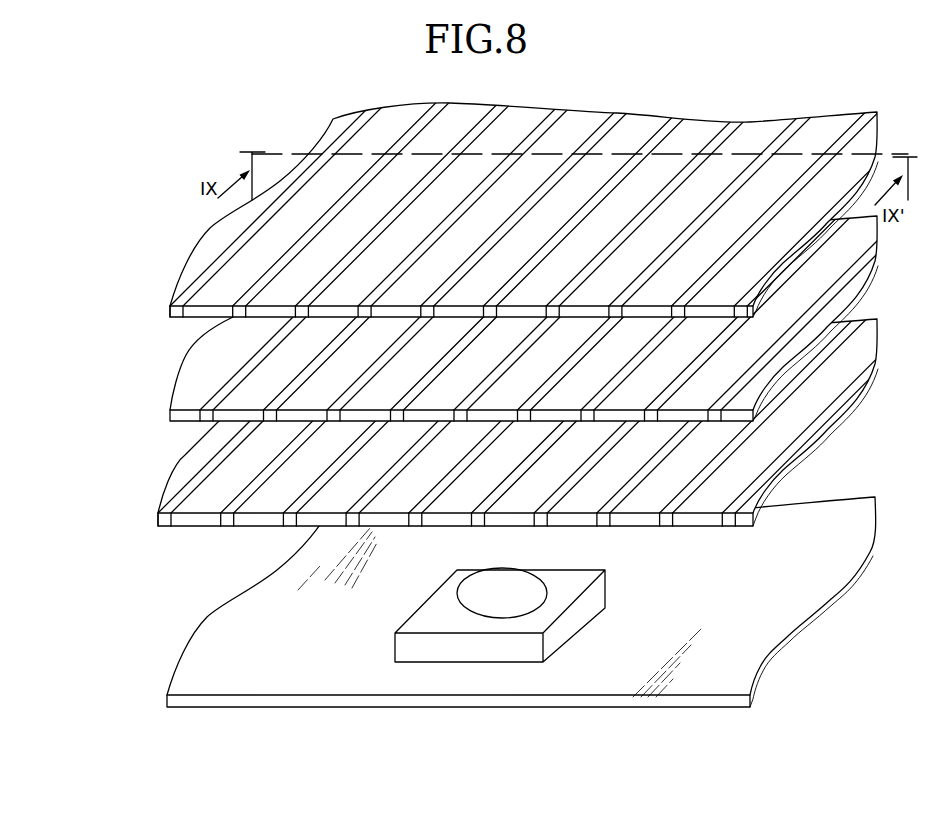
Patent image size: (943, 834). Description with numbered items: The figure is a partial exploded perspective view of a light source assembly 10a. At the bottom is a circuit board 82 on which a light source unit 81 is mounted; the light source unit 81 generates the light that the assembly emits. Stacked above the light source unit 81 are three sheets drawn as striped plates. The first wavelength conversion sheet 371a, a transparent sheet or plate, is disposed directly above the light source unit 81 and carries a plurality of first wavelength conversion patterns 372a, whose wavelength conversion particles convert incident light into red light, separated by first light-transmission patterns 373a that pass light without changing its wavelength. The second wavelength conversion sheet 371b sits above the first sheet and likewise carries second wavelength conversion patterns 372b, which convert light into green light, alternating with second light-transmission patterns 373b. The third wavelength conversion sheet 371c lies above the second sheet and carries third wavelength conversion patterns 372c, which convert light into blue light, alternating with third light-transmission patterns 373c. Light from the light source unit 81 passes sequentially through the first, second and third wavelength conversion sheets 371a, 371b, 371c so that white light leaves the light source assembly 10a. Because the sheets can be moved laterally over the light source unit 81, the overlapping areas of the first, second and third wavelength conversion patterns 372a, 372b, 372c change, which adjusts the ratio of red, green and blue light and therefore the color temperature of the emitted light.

The light source assembly 10a is at (285, 717).
The light source unit 81 is at (428, 643).
The circuit board 82 is at (503, 670).
The first wavelength conversion sheet 371a is at (486, 433).
The first wavelength conversion patterns 372a is at (170, 508).
The first light-transmission patterns 373a is at (163, 517).
The second wavelength conversion sheet 371b is at (480, 310).
The second wavelength conversion patterns 372b is at (227, 383).
The second light-transmission patterns 373b is at (227, 393).
The third wavelength conversion sheet 371c is at (486, 206).
The third wavelength conversion patterns 372c is at (203, 263).
The third light-transmission patterns 373c is at (205, 295).